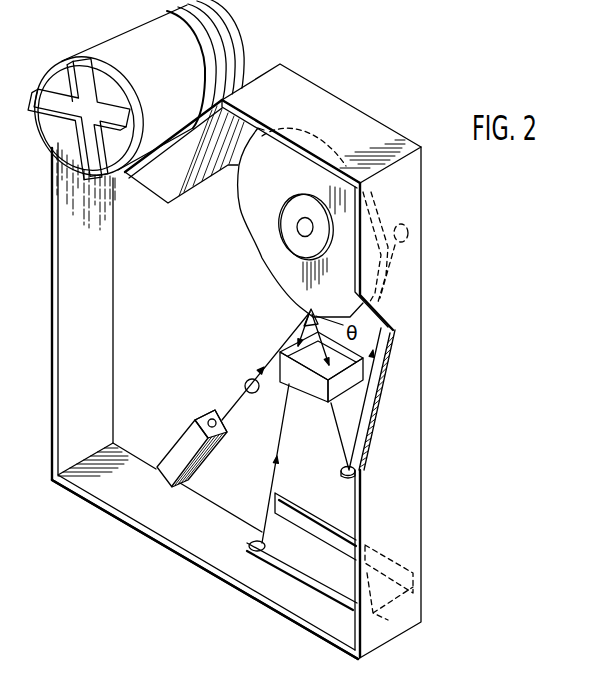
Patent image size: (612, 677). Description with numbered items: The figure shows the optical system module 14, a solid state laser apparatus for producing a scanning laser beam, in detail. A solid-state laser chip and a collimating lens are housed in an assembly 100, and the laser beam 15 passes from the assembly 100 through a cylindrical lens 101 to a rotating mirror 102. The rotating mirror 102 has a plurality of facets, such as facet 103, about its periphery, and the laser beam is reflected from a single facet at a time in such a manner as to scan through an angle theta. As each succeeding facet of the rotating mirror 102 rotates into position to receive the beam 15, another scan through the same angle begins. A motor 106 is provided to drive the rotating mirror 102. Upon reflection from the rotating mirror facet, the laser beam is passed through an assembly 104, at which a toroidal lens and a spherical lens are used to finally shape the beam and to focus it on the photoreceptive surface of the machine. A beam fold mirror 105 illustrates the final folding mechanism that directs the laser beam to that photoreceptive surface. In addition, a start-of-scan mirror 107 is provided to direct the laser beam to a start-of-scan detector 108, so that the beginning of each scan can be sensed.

The optical system module 14 is at (359, 120).
The laser beam 15 is at (214, 408).
The assembly 100 is at (183, 434).
The cylindrical lens 101 is at (247, 382).
The rotating mirror 102 is at (253, 227).
The facet 103 is at (303, 309).
The assembly 104 is at (311, 392).
The beam fold mirror 105 is at (250, 548).
The motor 106 is at (118, 37).
The start-of-scan mirror 107 is at (357, 471).
The start-of-scan detector 108 is at (412, 235).